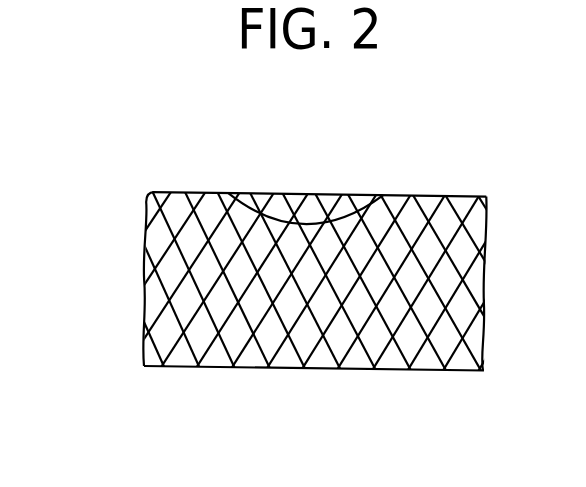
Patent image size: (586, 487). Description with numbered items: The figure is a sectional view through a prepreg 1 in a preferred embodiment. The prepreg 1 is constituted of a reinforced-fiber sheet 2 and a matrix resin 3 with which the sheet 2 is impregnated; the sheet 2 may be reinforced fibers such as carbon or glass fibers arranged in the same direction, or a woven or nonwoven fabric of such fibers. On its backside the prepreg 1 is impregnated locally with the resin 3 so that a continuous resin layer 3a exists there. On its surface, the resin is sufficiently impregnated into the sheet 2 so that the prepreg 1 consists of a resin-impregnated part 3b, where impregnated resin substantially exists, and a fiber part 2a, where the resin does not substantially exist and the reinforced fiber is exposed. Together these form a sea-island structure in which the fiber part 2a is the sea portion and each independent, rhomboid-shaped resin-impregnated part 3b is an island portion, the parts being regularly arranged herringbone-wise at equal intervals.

The prepreg 1 is at (423, 402).
The reinforced-fiber sheet 2 is at (444, 194).
The fiber part 2a is at (317, 193).
The matrix resin 3 is at (140, 117).
The continuous resin layer 3a is at (172, 265).
The resin-impregnated part 3b is at (192, 193).